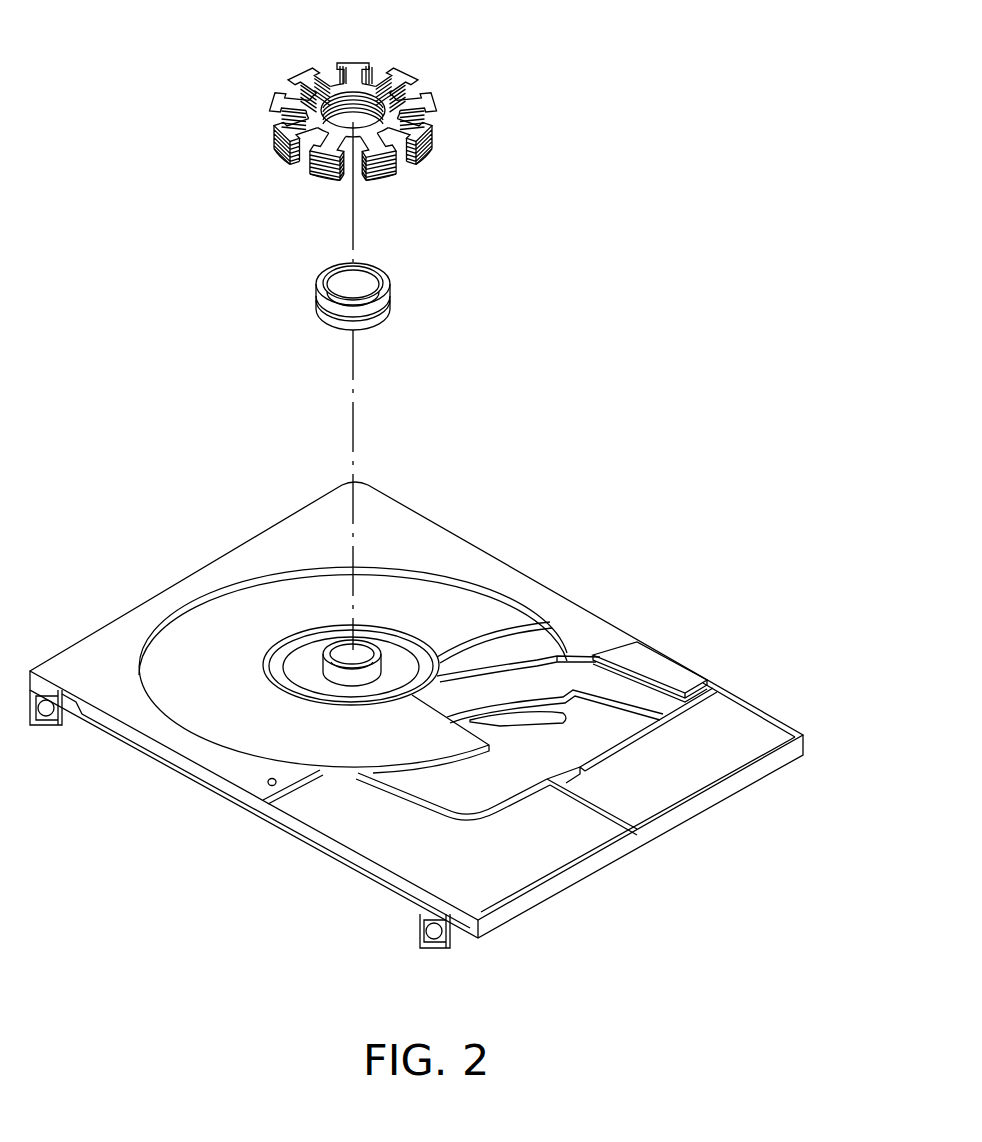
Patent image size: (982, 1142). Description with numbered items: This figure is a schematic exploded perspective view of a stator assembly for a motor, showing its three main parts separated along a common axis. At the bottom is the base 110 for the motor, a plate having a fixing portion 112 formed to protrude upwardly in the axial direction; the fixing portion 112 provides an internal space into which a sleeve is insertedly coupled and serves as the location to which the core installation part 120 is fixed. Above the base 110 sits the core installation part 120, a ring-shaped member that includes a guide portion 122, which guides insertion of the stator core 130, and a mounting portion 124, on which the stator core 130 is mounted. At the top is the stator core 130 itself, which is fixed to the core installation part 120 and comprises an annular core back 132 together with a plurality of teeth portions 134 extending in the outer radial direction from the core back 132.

The base 110 is at (418, 715).
The fixing portion 112 is at (378, 668).
The core installation part 120 is at (429, 290).
The guide portion 122 is at (390, 283).
The mounting portion 124 is at (390, 295).
The stator core 130 is at (429, 90).
The core back 132 is at (382, 92).
The teeth portions 134 is at (430, 100).